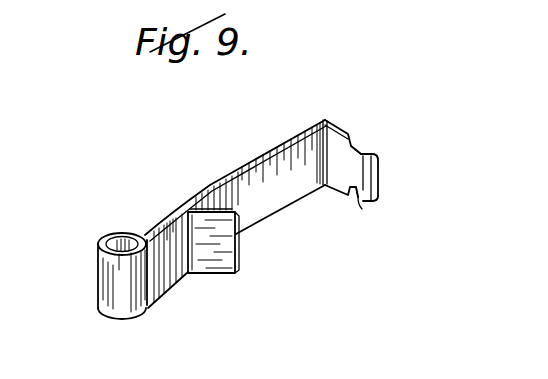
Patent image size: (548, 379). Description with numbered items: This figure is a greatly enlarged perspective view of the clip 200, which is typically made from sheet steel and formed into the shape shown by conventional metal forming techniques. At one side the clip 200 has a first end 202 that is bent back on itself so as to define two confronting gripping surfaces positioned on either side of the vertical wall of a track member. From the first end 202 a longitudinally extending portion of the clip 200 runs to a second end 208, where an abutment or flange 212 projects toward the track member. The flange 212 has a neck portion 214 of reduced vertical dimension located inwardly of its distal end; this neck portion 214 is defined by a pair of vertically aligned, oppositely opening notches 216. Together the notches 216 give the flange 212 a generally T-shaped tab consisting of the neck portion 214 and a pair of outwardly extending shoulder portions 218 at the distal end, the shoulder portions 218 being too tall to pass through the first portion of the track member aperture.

The clip 200 is at (216, 161).
The first end 202 is at (103, 228).
The second end 208 is at (275, 148).
The flange 212 is at (344, 120).
The neck portion 214 is at (358, 177).
The notches 216 is at (354, 143).
The shoulder portions 218 is at (366, 153).